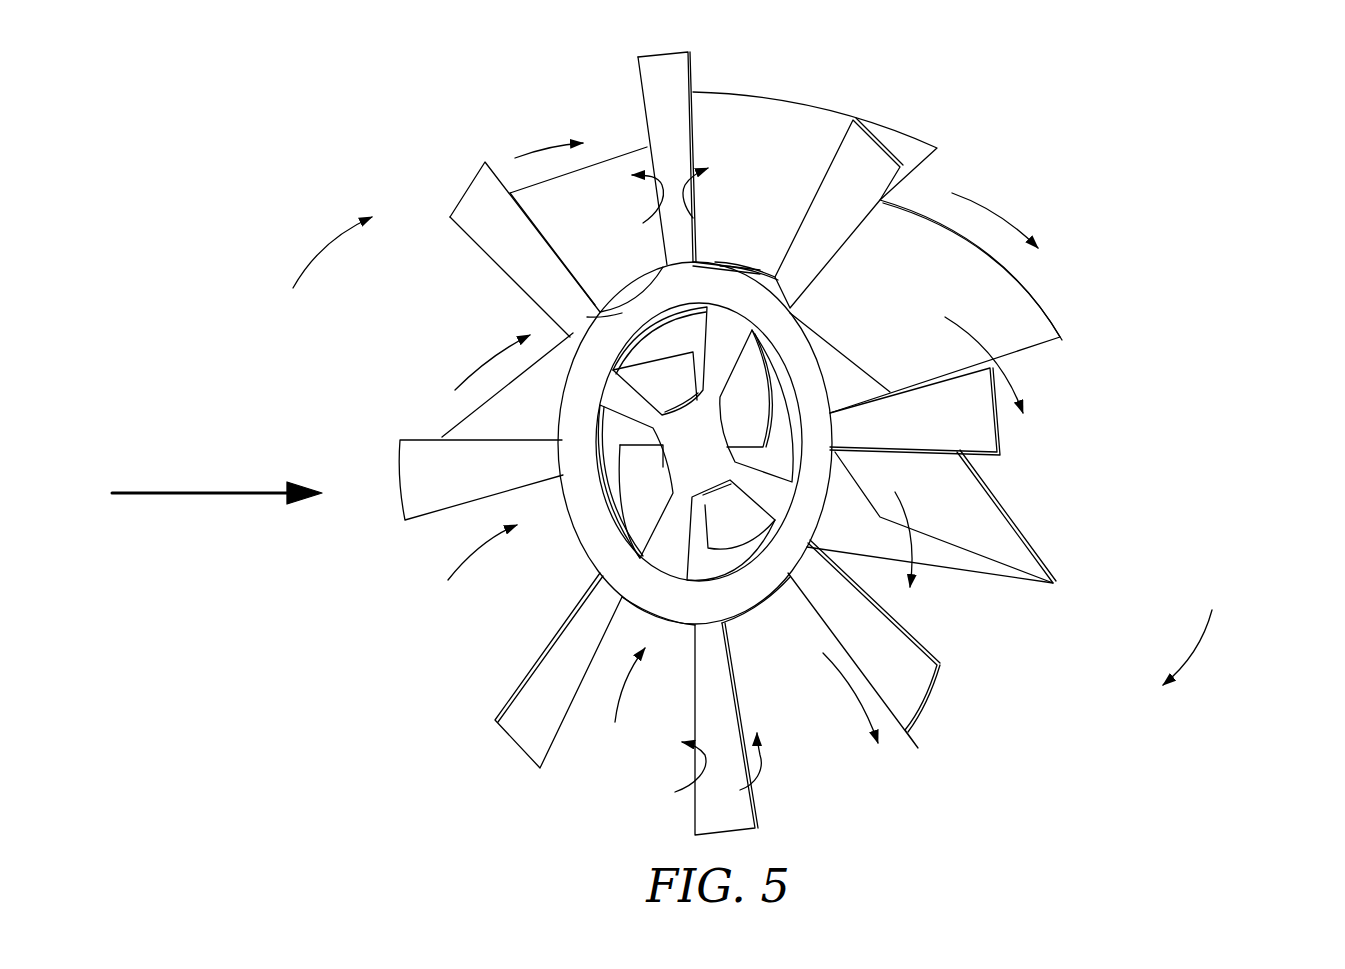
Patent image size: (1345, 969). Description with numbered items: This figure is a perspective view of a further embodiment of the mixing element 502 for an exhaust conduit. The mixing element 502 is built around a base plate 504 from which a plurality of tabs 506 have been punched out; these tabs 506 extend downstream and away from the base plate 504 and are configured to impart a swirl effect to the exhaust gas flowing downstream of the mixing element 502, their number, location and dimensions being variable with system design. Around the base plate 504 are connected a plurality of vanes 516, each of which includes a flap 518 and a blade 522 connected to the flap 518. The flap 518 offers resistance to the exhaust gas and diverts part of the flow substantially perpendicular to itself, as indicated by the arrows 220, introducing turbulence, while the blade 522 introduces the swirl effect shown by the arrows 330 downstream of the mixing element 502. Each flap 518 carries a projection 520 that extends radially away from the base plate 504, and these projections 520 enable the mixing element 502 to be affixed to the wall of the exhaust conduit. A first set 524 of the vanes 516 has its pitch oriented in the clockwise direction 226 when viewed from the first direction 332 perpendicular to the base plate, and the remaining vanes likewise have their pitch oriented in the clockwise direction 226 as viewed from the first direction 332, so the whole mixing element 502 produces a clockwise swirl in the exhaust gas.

The arrows 220 is at (647, 172).
The clockwise direction 226 is at (310, 262).
The arrows 330 is at (537, 152).
The first direction 332 is at (220, 492).
The mixing element 502 is at (1192, 217).
The base plate 504 is at (480, 180).
The tabs 506 is at (678, 384).
The vanes 516 is at (1085, 330).
The flap 518 is at (866, 197).
The projection 520 is at (667, 83).
The blade 522 is at (923, 292).
The first set 524 is at (1210, 460).